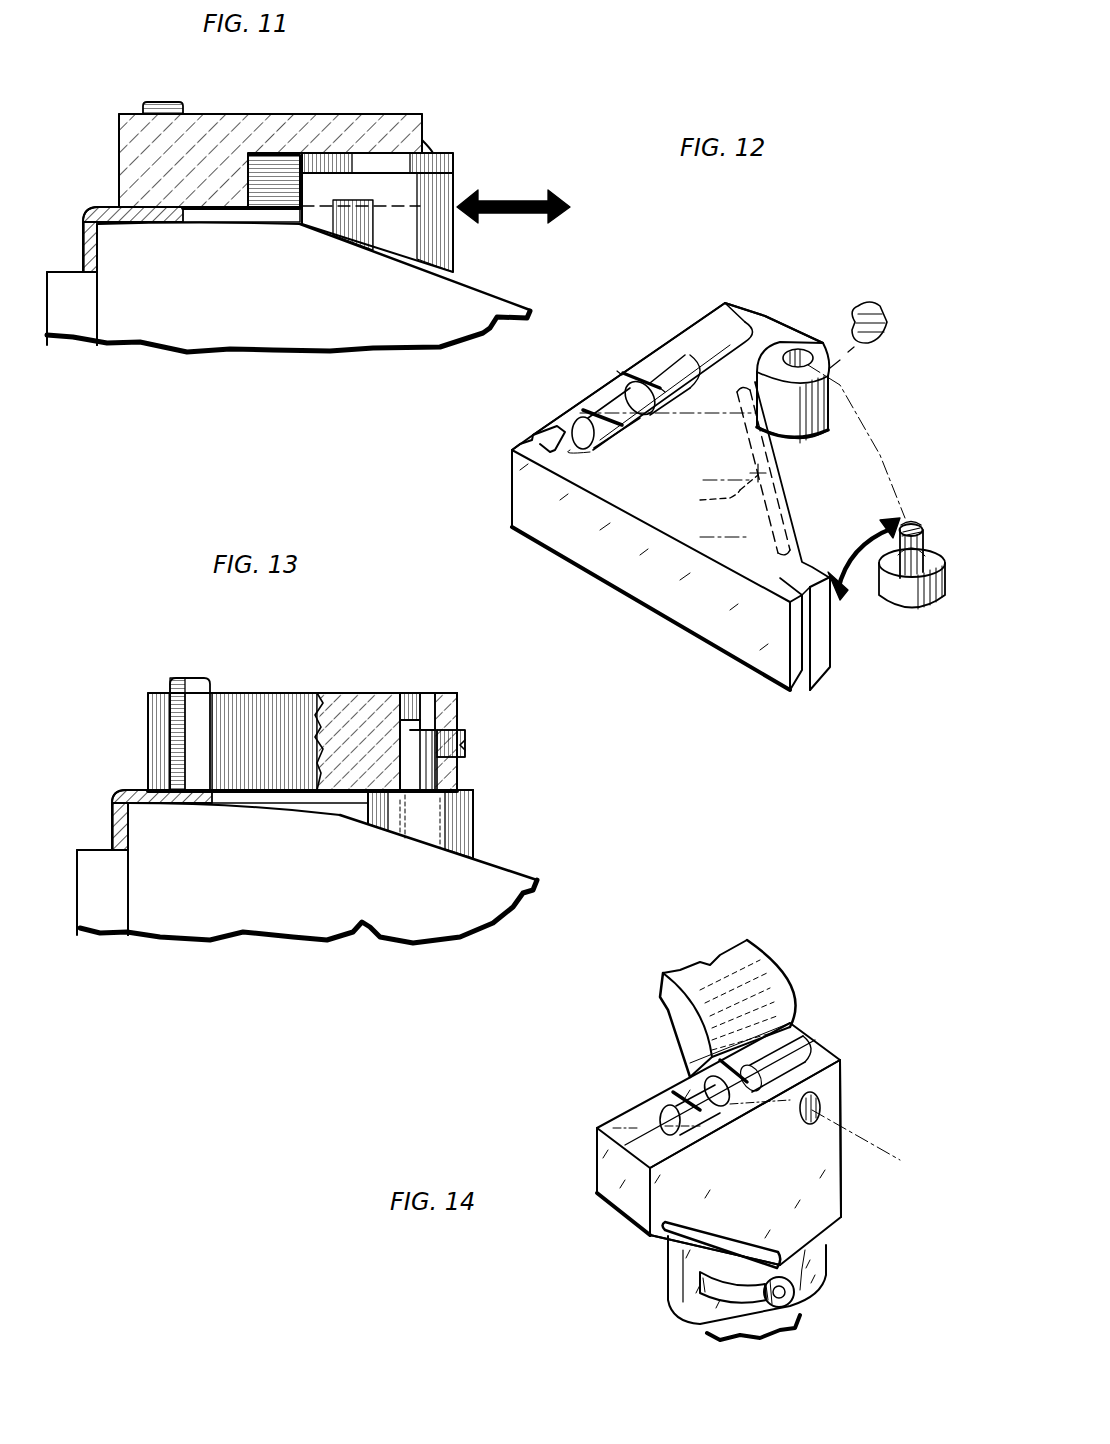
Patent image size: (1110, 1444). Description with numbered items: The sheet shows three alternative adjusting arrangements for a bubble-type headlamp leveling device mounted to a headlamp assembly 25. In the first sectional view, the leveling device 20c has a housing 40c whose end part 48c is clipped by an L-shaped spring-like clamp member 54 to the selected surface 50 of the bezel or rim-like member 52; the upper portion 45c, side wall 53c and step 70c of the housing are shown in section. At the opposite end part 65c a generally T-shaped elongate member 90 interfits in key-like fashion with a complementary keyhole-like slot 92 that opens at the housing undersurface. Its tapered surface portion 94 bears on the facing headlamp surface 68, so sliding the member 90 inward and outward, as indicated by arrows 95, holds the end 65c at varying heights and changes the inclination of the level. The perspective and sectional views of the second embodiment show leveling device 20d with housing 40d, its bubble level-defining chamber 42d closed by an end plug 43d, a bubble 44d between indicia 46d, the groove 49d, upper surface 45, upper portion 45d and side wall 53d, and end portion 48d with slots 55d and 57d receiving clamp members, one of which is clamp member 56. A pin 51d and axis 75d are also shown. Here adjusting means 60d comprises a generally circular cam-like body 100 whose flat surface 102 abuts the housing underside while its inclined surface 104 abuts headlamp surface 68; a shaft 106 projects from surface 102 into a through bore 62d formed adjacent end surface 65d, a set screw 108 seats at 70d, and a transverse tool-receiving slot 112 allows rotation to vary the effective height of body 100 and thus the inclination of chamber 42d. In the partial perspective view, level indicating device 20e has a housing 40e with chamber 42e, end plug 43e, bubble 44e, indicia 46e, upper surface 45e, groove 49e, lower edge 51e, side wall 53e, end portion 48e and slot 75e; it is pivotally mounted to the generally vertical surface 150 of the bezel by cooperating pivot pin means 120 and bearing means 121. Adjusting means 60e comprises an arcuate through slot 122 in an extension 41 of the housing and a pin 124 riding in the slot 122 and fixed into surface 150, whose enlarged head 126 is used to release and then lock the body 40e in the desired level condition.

In FIG. 11, the leveling device 20c is at (350, 100).
In FIG. 11, the headlamp assembly 25 is at (150, 309).
In FIG. 13, the headlamp assembly 25 is at (183, 896).
In FIG. 11, the housing 40c is at (125, 100).
In FIG. 11, the housing 45c is at (262, 113).
In FIG. 11, the end part 48c is at (115, 122).
In FIG. 11, the selected surface / bezel 50 is at (98, 205).
In FIG. 13, the selected surface / bezel 50 is at (106, 790).
In FIG. 14, the selected surface / bezel 50 is at (721, 960).
In FIG. 11, the headlamp bezel or rim-like member 52 is at (93, 243).
In FIG. 13, the headlamp bezel or rim-like member 52 is at (97, 834).
In FIG. 11, the block side wall 53c is at (118, 145).
In FIG. 11, the spring-like clamp member 54 is at (160, 102).
In FIG. 11, the end part of housing 65c is at (422, 113).
In FIG. 11, the headlamp surface 68 is at (486, 286).
In FIG. 13, the headlamp surface 68 is at (513, 870).
In FIG. 11, the step 70c is at (433, 143).
In FIG. 11, the elongate member 90 is at (454, 163).
In FIG. 11, the slot 92 is at (273, 190).
In FIG. 11, the tapered surface portion 94 is at (372, 252).
In FIG. 11, the arrows 95 is at (530, 193).
In FIG. 12, the leveling device 20d is at (726, 270).
In FIG. 12, the housing 40d is at (767, 281).
In FIG. 13, the housing 40d is at (145, 690).
In FIG. 12, the chamber 42d is at (581, 433).
In FIG. 12, the end plug 43d is at (716, 332).
In FIG. 12, the bubble 44d is at (628, 392).
In FIG. 12, the clamp upper surface 45 is at (648, 483).
In FIG. 12, the indicia means 46d is at (642, 400).
In FIG. 12, the end portion 48d is at (633, 562).
In FIG. 13, the end portion 48d is at (145, 722).
In FIG. 12, the groove 49d is at (662, 347).
In FIG. 12, the lever pin 51d is at (784, 475).
In FIG. 13, the lever pin 51d is at (246, 788).
In FIG. 12, the block side wall 53d is at (729, 620).
In FIG. 13, the block side wall 53d is at (156, 722).
In FIG. 12, the slot 55d is at (532, 445).
In FIG. 12, the slot 57d is at (803, 665).
In FIG. 12, the adjusting means 60d is at (834, 381).
In FIG. 12, the through bore 62d is at (798, 352).
In FIG. 13, the through bore 62d is at (404, 695).
In FIG. 12, the end surface of housing 65d is at (765, 316).
In FIG. 13, the end surface of housing 65d is at (456, 702).
In FIG. 12, the screw seat 70d is at (885, 323).
In FIG. 12, the pivot axis 75d is at (736, 508).
In FIG. 12, the cam-like body 100 is at (940, 606).
In FIG. 13, the cam-like body 100 is at (474, 816).
In FIG. 12, the inclined surface 104 is at (875, 598).
In FIG. 13, the inclined surface 104 is at (418, 839).
In FIG. 12, the shaft 106 is at (908, 528).
In FIG. 13, the shaft 106 is at (423, 771).
In FIG. 12, the set screw member 108 is at (870, 316).
In FIG. 13, the set screw member 108 is at (472, 745).
In FIG. 12, the transverse slot 112 is at (905, 526).
In FIG. 13, the transverse slot 112 is at (415, 720).
In FIG. 13, the spring-like clamp member 56 is at (191, 678).
In FIG. 13, the clamp upper portion 45d is at (268, 693).
In FIG. 13, the flat surface 102 is at (470, 785).
In FIG. 14, the level indicating device 20e is at (596, 1096).
In FIG. 14, the housing 40e is at (595, 1143).
In FIG. 14, the extension 41 is at (822, 1278).
In FIG. 14, the chamber 42e is at (663, 1108).
In FIG. 14, the end plug 43e is at (777, 1050).
In FIG. 14, the bubble 44e is at (719, 1105).
In FIG. 14, the clamp upper surface 45e is at (790, 1178).
In FIG. 14, the indicia means 46e is at (664, 1080).
In FIG. 14, the end portion 48e is at (847, 1064).
In FIG. 14, the groove 49e is at (642, 1142).
In FIG. 14, the block lower edge 51e is at (658, 1240).
In FIG. 14, the block side wall 53e is at (846, 1166).
In FIG. 14, the adjusting means 60e is at (660, 1295).
In FIG. 14, the slot 75e is at (697, 1229).
In FIG. 14, the pivot pin means 120 is at (826, 1108).
In FIG. 14, the bearing means 121 is at (835, 1100).
In FIG. 14, the arcuate through slot 122 is at (715, 1293).
In FIG. 14, the pin 124 is at (780, 1295).
In FIG. 14, the enlarged head 126 is at (773, 1264).
In FIG. 14, the vertically disposed surface 150 is at (785, 1336).